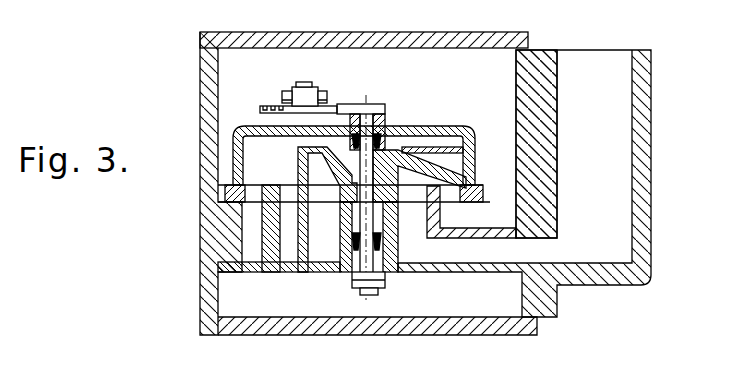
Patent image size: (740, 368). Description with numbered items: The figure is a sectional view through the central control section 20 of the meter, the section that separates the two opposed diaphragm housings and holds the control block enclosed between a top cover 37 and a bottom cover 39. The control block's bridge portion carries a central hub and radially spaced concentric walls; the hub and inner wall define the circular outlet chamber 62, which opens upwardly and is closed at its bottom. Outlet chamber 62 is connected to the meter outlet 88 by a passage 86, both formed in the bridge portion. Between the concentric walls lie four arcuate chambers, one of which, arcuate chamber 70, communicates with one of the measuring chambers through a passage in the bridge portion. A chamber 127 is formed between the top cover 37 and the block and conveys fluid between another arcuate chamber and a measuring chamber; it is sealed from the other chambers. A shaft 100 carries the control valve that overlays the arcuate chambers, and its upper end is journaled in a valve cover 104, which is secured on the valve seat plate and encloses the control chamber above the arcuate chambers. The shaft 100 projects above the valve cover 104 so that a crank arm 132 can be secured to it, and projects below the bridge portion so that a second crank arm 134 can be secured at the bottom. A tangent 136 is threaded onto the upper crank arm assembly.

The central control section 20 is at (195, 264).
The top cover 37 is at (436, 45).
The bottom cover 39 is at (540, 330).
The meter outlet 88 is at (613, 82).
The chamber 127 is at (489, 74).
The passage 86 is at (521, 257).
The valve cover 104 is at (442, 128).
The arcuate chamber 70 is at (290, 256).
The outlet chamber 62 is at (327, 248).
The shaft 100 is at (367, 122).
The crank arm 132 is at (338, 104).
The tangent 136 is at (291, 91).
The crank arm 134 is at (387, 287).